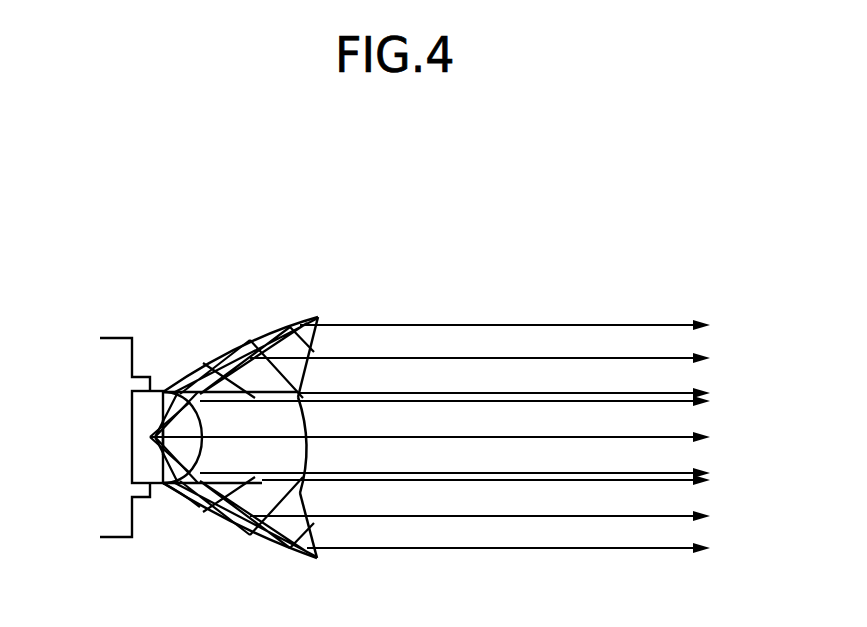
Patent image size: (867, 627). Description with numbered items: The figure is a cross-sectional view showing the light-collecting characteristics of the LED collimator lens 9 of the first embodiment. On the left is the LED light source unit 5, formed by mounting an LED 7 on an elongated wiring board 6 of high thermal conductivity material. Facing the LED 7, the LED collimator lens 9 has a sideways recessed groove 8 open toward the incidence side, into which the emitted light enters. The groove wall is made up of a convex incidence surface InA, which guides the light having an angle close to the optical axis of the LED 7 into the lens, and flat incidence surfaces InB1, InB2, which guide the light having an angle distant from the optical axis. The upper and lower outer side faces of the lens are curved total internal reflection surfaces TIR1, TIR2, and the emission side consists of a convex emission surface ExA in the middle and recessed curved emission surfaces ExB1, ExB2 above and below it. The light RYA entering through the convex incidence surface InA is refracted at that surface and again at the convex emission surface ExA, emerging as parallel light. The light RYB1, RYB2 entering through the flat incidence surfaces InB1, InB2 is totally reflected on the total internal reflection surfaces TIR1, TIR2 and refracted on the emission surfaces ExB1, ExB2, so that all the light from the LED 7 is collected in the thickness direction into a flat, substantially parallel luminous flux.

The LED light source unit 5 is at (113, 376).
The wiring board 6 is at (152, 391).
The LED 7 is at (182, 458).
The recessed groove 8 is at (197, 492).
The LED collimator lens 9 is at (282, 430).
The total internal reflection surface TIR1 is at (247, 345).
The total internal reflection surface TIR2 is at (212, 510).
The recessed curved emission surface ExB1 is at (312, 346).
The recessed curved emission surface ExB2 is at (310, 533).
The convex emission surface ExA is at (302, 450).
The flat incidence surface InB1 is at (168, 410).
The flat incidence surface InB2 is at (166, 483).
The convex incidence surface InA is at (180, 430).
The light RYB1 is at (724, 320).
The light RYA is at (724, 400).
The light RYB2 is at (724, 478).